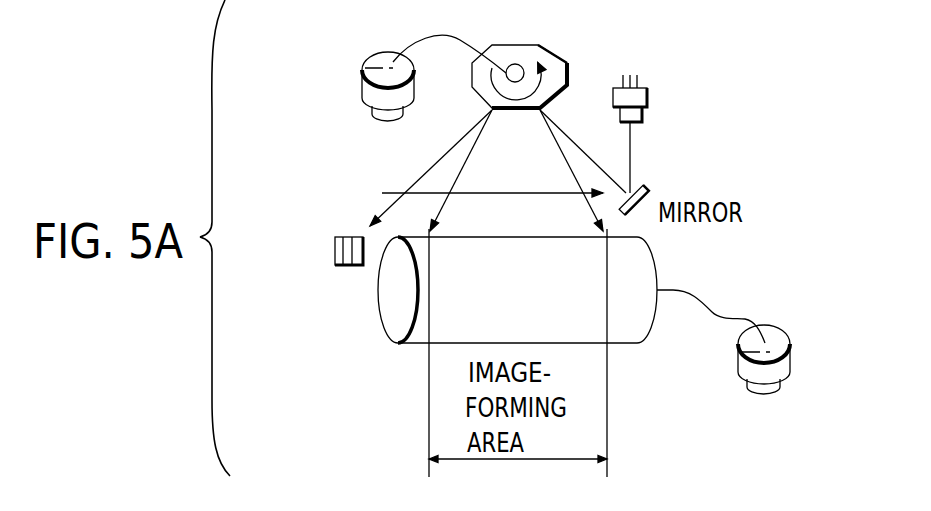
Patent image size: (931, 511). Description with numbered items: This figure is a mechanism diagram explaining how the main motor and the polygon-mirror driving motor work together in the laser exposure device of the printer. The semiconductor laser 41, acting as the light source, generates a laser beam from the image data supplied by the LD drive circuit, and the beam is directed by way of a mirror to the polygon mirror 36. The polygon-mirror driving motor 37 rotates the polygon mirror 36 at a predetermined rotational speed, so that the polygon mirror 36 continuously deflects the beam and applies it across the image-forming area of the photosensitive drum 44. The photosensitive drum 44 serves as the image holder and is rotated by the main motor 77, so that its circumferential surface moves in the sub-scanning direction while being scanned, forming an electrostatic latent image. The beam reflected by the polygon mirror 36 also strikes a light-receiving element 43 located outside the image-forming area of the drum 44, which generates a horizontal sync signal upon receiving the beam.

The polygon-mirror driving motor 37 is at (365, 60).
The polygon mirror 36 is at (556, 59).
The semiconductor laser 41 is at (643, 91).
The light-receiving element 43 is at (335, 250).
The photosensitive drum 44 is at (382, 325).
The main motor 77 is at (787, 332).